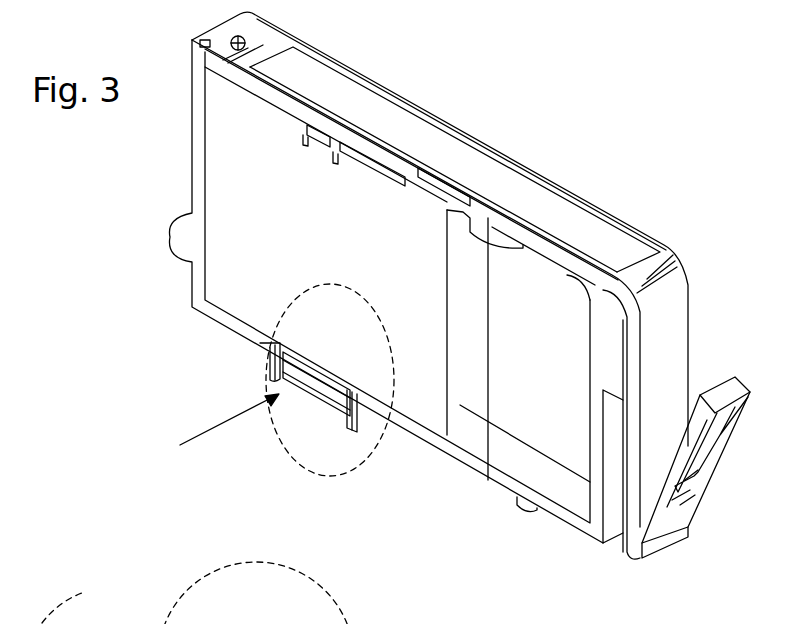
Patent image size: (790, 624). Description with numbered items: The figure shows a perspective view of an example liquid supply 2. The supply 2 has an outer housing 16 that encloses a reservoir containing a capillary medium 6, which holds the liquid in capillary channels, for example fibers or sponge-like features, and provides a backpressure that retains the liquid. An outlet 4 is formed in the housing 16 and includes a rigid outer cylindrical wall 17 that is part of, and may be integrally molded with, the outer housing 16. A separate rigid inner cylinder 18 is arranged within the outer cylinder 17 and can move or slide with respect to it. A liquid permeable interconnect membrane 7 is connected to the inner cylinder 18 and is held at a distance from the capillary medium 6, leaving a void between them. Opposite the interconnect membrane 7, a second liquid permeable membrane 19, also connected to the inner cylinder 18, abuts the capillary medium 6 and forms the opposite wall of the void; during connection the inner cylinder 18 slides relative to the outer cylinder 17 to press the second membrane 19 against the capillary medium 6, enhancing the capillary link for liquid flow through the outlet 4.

The liquid supply 2 is at (556, 119).
The outer housing 16 is at (192, 177).
The capillary medium 6 is at (291, 236).
The second liquid permeable membrane 19 is at (267, 360).
The rigid outer cylindrical wall 17 is at (267, 372).
The interconnect membrane 7 is at (300, 405).
The inner cylinder 18 is at (357, 430).
The outlet 4 is at (220, 431).